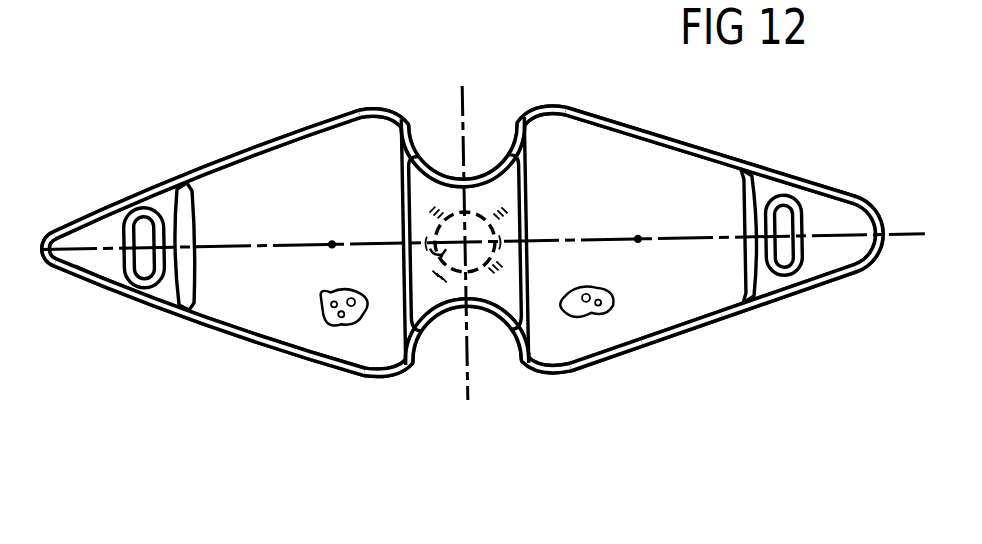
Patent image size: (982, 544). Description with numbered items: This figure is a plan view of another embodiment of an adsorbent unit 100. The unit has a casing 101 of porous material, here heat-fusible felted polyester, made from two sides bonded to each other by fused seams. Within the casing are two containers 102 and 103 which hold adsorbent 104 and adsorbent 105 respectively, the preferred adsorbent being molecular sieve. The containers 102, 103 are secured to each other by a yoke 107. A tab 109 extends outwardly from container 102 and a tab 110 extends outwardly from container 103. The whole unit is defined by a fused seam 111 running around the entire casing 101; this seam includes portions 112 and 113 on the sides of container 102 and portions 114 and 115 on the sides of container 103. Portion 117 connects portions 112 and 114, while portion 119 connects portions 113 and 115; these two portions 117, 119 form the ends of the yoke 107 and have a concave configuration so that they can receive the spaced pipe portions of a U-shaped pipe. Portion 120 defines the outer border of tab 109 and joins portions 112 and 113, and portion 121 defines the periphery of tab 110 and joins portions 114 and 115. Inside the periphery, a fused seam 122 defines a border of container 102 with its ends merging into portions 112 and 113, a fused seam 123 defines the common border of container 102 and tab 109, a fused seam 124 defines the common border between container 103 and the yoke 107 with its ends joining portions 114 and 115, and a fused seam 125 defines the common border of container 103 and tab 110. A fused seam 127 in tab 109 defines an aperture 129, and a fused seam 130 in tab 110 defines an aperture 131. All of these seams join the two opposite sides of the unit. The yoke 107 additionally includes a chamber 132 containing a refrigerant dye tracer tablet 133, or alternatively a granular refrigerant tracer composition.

The adsorbent unit 100 is at (205, 56).
The casing 101 is at (652, 155).
The container 102 is at (652, 305).
The container 103 is at (290, 320).
The adsorbent 104 is at (617, 353).
The adsorbent 105 is at (356, 336).
The yoke 107 is at (487, 162).
The tab 109 is at (812, 256).
The tab 110 is at (106, 270).
The fused seam 111 is at (723, 320).
The portion of fused seam 112 is at (619, 124).
The portion of fused seam 113 is at (730, 330).
The portion of fused seam 114 is at (270, 142).
The portion of fused seam 115 is at (214, 328).
The portion of fused seam 117 is at (451, 160).
The portion of fused seam 119 is at (487, 318).
The portion of fused seam 120 is at (835, 192).
The portion of fused seam 121 is at (97, 200).
The fused seam 122 is at (530, 207).
The fused seam 123 is at (742, 206).
The fused seam 124 is at (400, 209).
The fused seam 125 is at (190, 223).
The fused seam 127 is at (802, 222).
The aperture 129 is at (783, 198).
The fused seam 130 is at (124, 237).
The aperture 131 is at (145, 203).
The chamber 132 is at (477, 225).
The refrigerant dye tracer tablet 133 is at (422, 261).